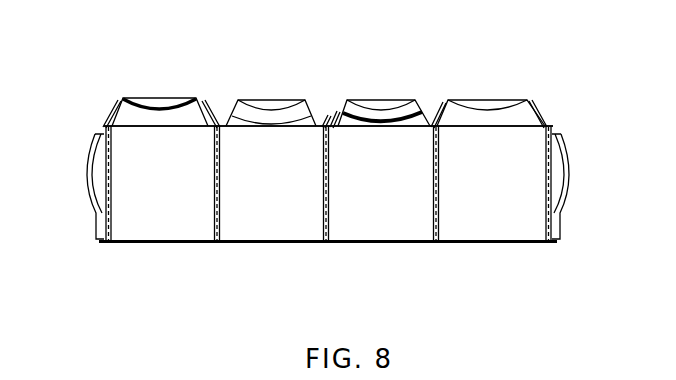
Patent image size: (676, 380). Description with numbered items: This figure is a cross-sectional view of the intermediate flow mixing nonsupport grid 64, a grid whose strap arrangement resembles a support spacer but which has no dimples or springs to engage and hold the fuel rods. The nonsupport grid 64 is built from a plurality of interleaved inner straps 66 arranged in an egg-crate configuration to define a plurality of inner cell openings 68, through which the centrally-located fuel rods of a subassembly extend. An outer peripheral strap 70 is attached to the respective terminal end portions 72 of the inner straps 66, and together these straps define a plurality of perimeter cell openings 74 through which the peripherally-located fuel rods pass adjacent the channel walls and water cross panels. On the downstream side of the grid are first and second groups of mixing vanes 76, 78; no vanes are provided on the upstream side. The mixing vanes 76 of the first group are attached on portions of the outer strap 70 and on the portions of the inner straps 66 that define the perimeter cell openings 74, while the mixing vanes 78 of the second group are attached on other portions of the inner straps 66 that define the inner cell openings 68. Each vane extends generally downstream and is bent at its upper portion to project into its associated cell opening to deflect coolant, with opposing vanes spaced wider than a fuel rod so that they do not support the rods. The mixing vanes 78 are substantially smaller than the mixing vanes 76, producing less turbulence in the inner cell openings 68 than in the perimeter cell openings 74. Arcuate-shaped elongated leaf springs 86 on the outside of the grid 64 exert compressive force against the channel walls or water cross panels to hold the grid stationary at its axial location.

The intermediate flow mixing nonsupport grid 64 is at (561, 101).
The inner straps 66 is at (213, 216).
The inner cell openings 68 is at (378, 175).
The outer peripheral strap 70 is at (110, 203).
The terminal end portions 72 is at (167, 229).
The perimeter cell openings 74 is at (160, 185).
The mixing vanes of the first group 76 is at (213, 125).
The mixing vanes of the second group 78 is at (285, 118).
The leaf springs 86 is at (88, 192).